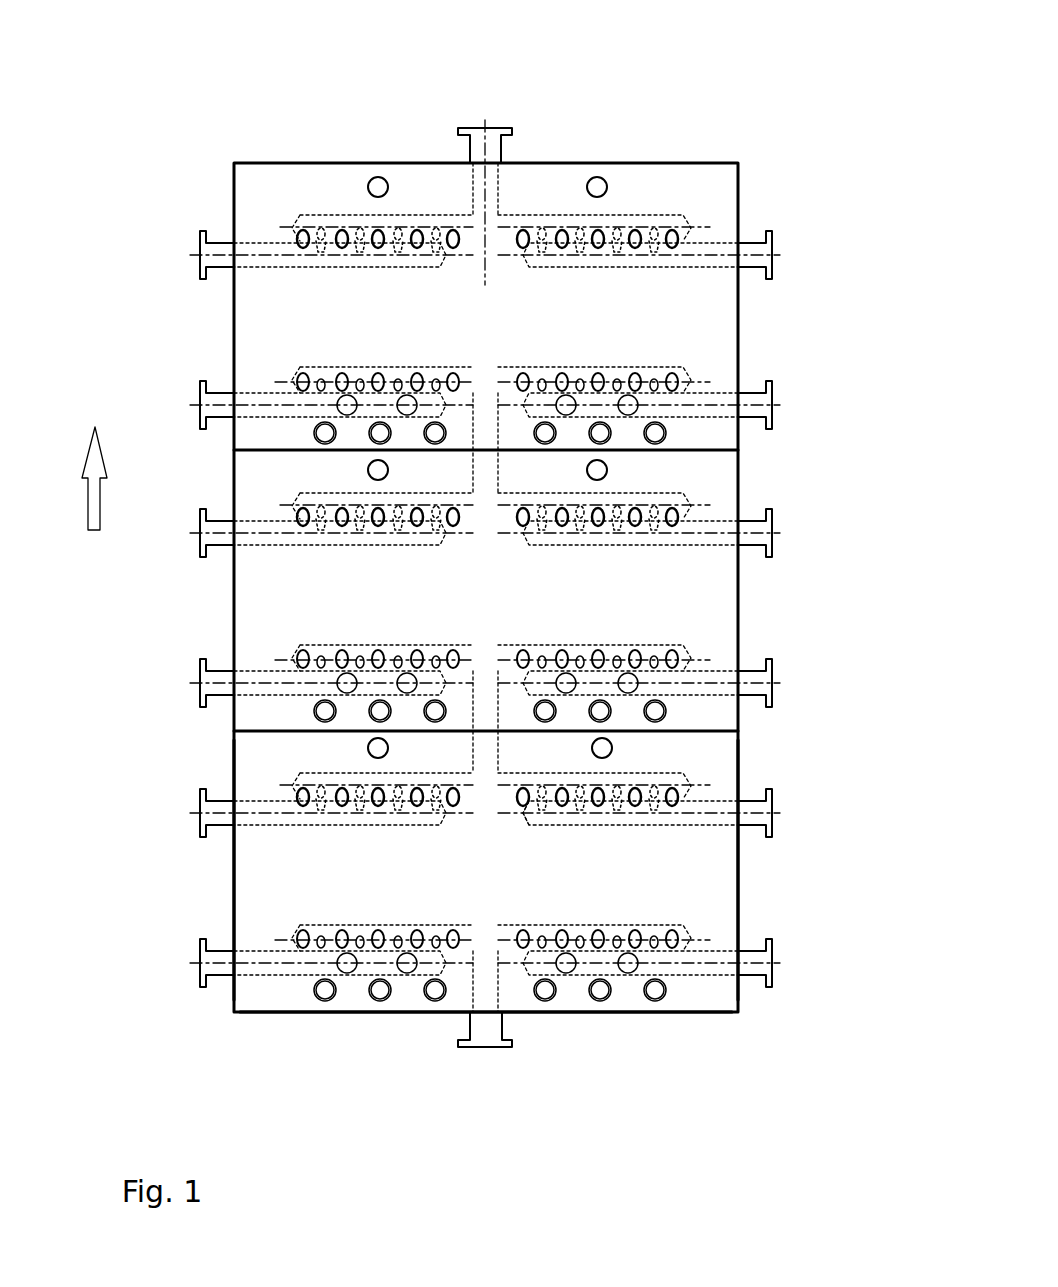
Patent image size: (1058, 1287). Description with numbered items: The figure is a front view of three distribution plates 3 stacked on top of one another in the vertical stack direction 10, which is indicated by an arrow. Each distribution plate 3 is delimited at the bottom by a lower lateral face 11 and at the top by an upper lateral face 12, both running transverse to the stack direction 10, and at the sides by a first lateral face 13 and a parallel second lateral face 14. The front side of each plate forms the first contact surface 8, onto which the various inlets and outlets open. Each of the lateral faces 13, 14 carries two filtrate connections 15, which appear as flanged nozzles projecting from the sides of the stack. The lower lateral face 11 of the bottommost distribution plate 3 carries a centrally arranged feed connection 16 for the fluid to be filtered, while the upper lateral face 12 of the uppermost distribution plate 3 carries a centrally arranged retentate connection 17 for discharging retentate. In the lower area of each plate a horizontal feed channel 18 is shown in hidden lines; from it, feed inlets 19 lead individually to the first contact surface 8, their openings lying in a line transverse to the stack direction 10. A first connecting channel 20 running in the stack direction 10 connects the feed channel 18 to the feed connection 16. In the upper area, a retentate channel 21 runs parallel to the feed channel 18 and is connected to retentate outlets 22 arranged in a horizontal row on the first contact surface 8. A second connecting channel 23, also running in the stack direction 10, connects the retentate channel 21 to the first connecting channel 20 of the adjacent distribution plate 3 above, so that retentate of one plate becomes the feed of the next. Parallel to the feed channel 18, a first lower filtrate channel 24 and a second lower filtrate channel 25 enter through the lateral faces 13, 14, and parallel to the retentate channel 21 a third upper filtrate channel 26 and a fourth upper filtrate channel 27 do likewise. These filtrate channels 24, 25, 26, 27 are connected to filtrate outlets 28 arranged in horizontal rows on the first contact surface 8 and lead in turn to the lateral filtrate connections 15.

The distribution plate 3 is at (770, 312).
The first contact surface 8 is at (703, 865).
The stack direction 10 is at (93, 488).
The lower lateral face 11 is at (657, 1035).
The upper lateral face 12 is at (638, 143).
The first lateral face 13 is at (229, 910).
The second lateral face 14 is at (740, 921).
The filtrate connection 15 is at (205, 795).
The feed connection 16 is at (463, 1042).
The retentate connection 17 is at (507, 130).
The feed channel 18 is at (460, 912).
The feed inlet 19 is at (525, 930).
The first connecting channel 20 is at (480, 983).
The retentate channel 21 is at (657, 780).
The retentate outlet 22 is at (300, 793).
The second connecting channel 23 is at (493, 200).
The first lower filtrate channel 24 is at (288, 965).
The second lower filtrate channel 25 is at (700, 965).
The third upper filtrate channel 26 is at (335, 815).
The fourth upper filtrate channel 27 is at (535, 822).
The filtrate outlet 28 is at (322, 800).